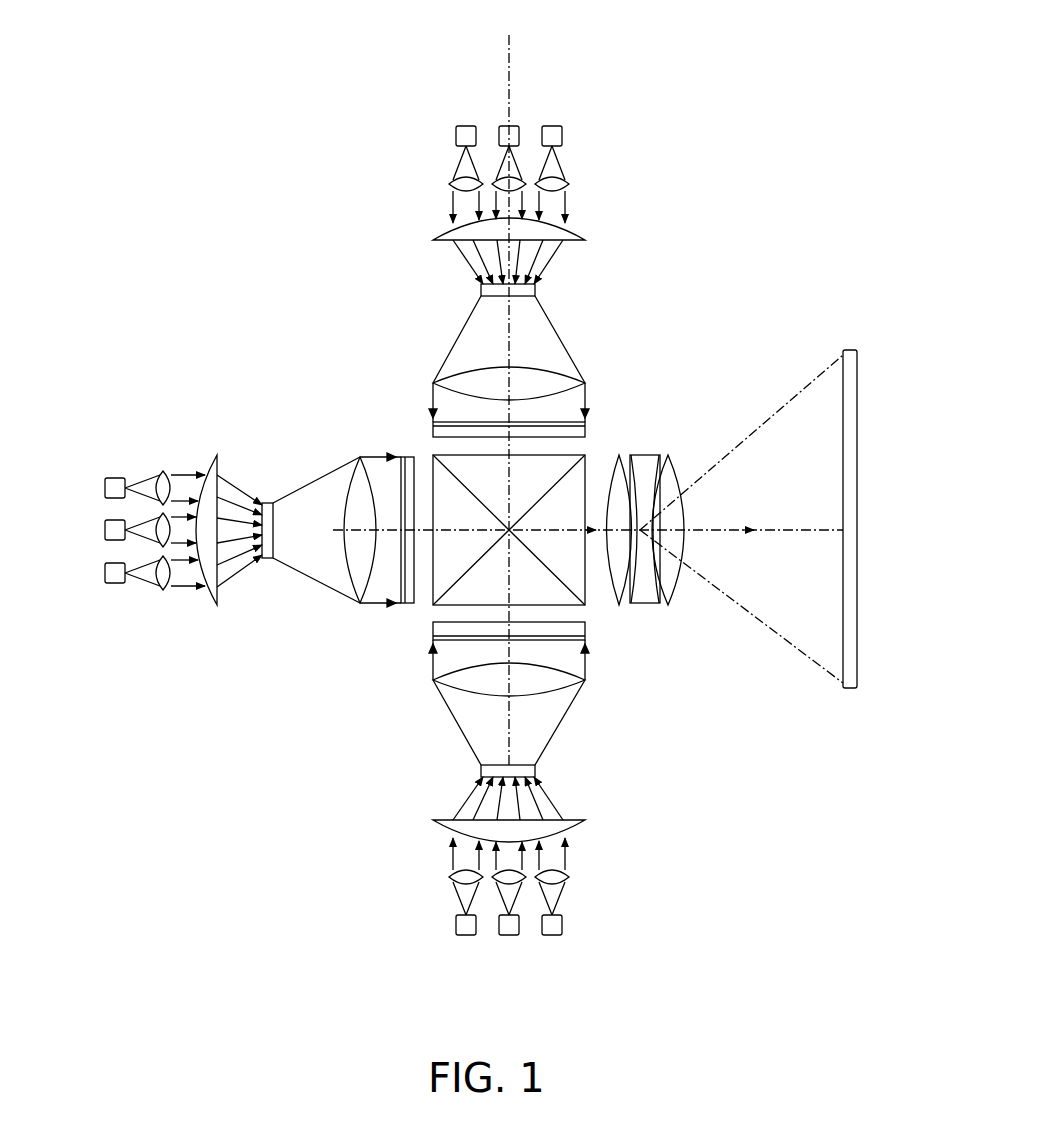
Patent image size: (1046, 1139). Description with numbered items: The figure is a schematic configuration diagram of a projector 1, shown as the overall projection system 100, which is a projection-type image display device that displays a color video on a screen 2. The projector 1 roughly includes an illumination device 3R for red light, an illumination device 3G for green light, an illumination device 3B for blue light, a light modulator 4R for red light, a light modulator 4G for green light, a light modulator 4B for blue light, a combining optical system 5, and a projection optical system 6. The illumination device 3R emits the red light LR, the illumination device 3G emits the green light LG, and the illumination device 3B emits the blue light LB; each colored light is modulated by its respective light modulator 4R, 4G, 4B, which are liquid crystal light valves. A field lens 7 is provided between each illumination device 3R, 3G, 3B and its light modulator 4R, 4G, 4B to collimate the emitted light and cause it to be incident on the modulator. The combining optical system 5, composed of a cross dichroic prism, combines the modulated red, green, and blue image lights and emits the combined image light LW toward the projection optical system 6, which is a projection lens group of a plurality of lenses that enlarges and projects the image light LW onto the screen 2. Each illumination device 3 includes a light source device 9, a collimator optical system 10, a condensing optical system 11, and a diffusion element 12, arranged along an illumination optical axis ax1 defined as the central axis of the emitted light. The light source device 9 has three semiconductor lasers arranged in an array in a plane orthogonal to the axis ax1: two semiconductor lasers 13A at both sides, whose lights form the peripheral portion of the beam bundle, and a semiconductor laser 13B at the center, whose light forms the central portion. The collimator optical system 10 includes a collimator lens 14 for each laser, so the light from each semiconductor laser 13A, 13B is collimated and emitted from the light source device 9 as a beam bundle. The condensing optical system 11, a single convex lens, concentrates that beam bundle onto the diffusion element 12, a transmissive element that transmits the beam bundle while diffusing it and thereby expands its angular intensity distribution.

The projector 1 is at (548, 64).
The projection system 100 is at (346, 328).
The screen 2 is at (855, 348).
The illumination device 3 is at (395, 505).
The illumination device for red light 3R is at (424, 127).
The illumination device for green light 3G is at (273, 610).
The illumination device for blue light 3B is at (426, 767).
The light modulator for red light 4R is at (585, 433).
The light modulator for green light 4G is at (410, 455).
The light modulator for blue light 4B is at (587, 631).
The combining optical system 5 is at (440, 592).
The projection optical system 6 is at (648, 600).
The field lens 7 is at (548, 371).
The light source device 9 is at (568, 136).
The collimator optical system 10 is at (585, 178).
The condensing optical system 11 is at (583, 232).
The diffusion element 12 is at (536, 288).
The semiconductor laser 13A is at (463, 125).
The semiconductor laser 13B is at (512, 125).
The collimator lens 14 is at (570, 186).
The illumination optical axis ax1 is at (508, 97).
The red light LR is at (558, 334).
The green light LG is at (308, 484).
The blue light LB is at (555, 733).
The image light LW is at (757, 427).